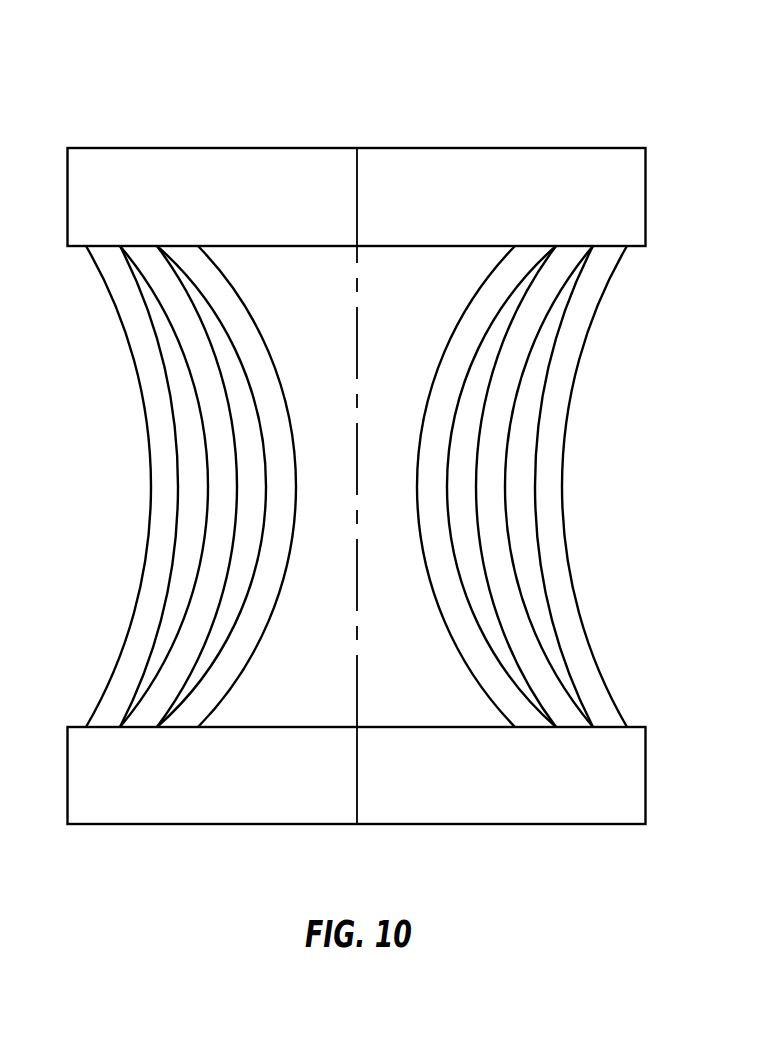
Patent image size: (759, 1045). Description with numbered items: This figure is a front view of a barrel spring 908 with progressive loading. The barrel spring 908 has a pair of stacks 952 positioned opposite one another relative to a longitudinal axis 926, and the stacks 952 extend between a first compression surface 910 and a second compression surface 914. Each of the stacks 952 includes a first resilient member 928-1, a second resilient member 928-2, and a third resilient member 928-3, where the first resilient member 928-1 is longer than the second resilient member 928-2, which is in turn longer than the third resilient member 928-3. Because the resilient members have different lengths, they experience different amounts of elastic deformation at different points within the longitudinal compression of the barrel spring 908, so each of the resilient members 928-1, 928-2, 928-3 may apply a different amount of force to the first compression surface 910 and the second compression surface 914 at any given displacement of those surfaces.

The barrel spring 908 is at (620, 79).
The first compression surface 910 is at (428, 171).
The second compression surface 914 is at (525, 802).
The longitudinal axis 926 is at (357, 802).
The stacks 952 is at (588, 419).
The first resilient member 928-1 is at (448, 547).
The second resilient member 928-2 is at (500, 492).
The third resilient member 928-3 is at (558, 445).